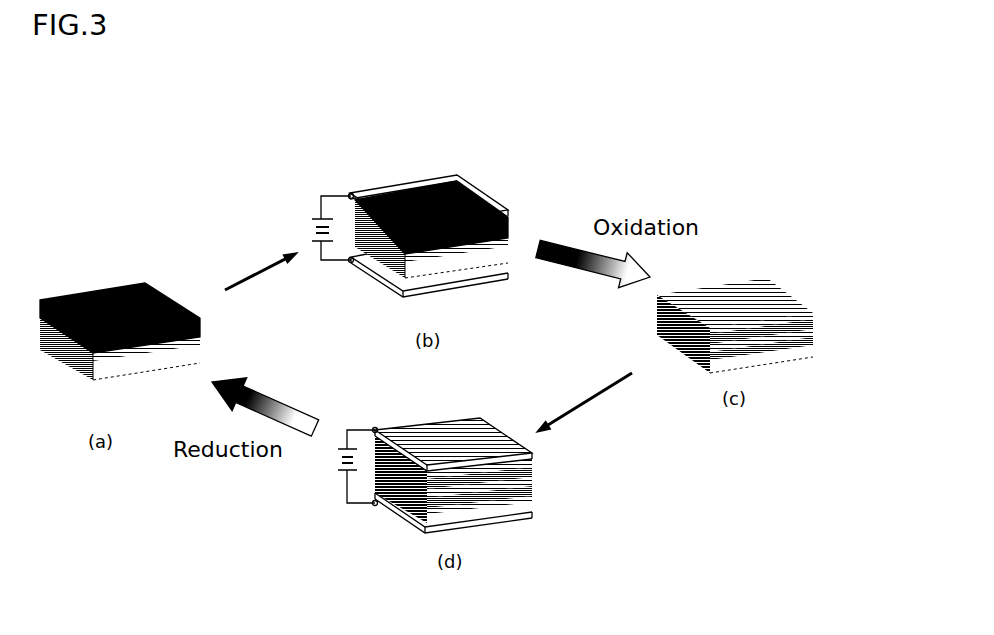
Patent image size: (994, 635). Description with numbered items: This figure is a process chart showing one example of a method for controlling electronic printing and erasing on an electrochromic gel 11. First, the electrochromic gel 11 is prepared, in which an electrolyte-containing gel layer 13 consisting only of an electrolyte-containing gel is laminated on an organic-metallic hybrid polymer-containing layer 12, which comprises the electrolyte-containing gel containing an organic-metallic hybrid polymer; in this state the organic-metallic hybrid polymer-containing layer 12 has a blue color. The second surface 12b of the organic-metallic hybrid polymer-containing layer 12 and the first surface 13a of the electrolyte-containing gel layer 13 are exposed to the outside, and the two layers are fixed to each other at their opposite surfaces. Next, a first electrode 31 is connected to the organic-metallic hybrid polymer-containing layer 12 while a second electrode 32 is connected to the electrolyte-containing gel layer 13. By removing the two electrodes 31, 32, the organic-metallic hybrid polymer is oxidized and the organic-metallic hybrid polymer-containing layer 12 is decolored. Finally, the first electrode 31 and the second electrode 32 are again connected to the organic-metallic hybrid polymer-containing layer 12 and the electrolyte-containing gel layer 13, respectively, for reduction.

The electrochromic gel 11 is at (117, 304).
The organic-metallic hybrid polymer-containing layer 12 is at (102, 289).
The electrolyte-containing gel layer 13 is at (77, 367).
The second surface 12b is at (372, 205).
The first surface 13a is at (360, 262).
The first electrode 31 is at (490, 179).
The second electrode 32 is at (519, 260).